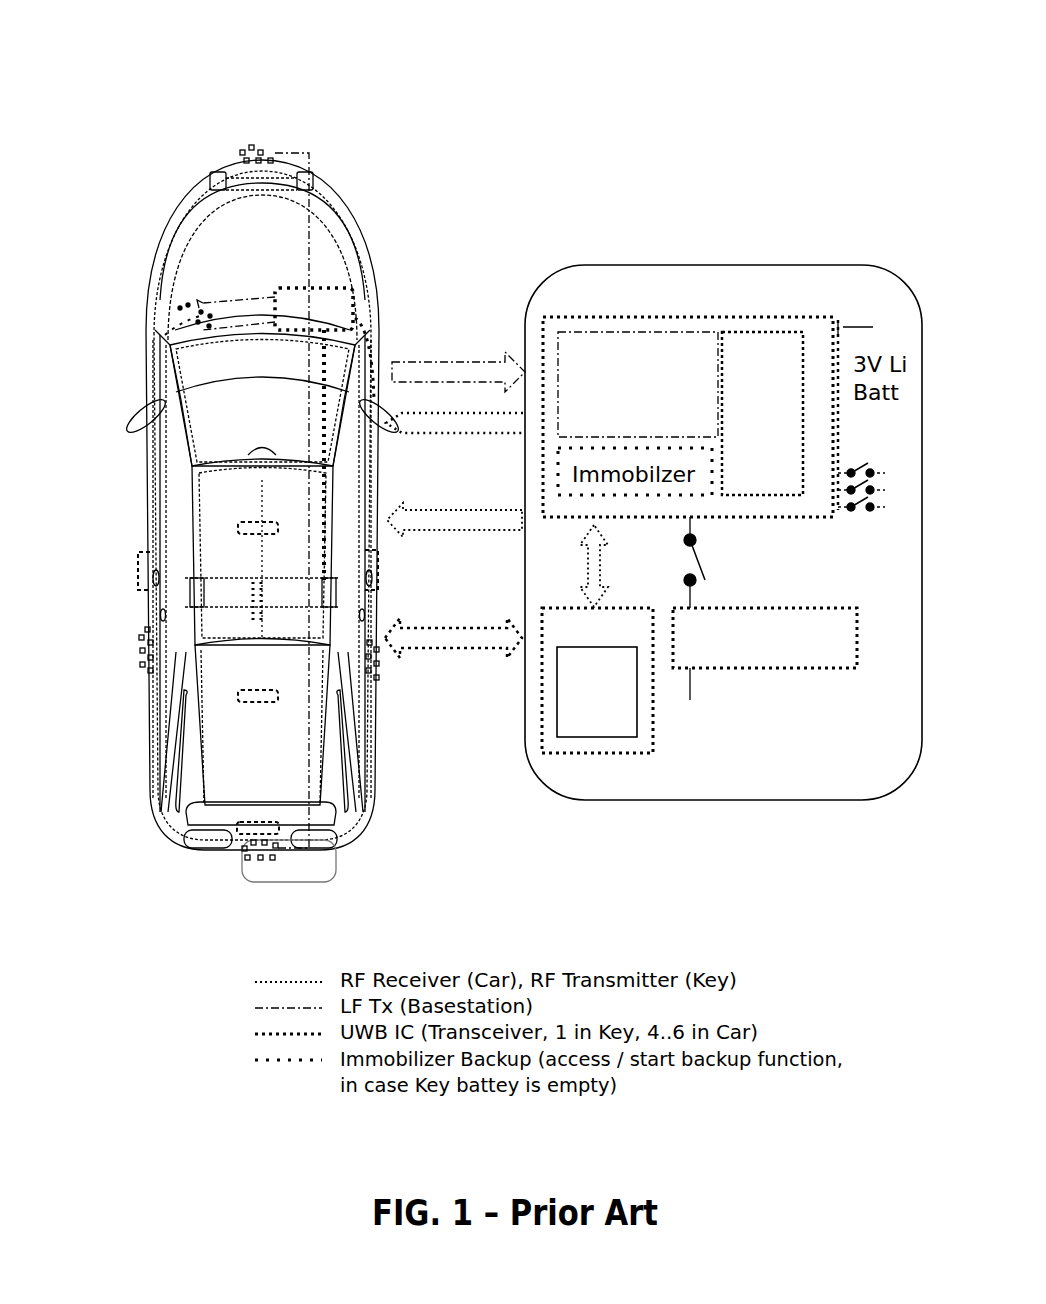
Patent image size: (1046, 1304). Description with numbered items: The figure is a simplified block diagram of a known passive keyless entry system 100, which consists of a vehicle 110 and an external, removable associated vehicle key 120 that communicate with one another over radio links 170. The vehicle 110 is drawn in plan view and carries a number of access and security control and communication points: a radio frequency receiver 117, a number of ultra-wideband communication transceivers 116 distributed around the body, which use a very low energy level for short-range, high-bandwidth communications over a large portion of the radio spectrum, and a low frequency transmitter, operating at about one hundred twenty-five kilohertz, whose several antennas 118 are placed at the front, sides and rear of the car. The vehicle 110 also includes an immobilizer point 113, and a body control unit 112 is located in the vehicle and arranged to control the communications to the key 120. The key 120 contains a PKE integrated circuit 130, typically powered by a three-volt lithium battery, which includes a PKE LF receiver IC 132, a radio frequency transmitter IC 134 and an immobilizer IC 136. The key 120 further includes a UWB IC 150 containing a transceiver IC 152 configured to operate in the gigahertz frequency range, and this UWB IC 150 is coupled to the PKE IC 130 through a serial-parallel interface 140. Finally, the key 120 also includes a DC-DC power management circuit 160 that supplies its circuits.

The passive keyless entry system 100 is at (175, 66).
The vehicle 110 is at (152, 232).
The body control unit 112 is at (350, 292).
The immobilizer point 113 is at (178, 308).
The ultra-wideband communication transceivers 116 is at (262, 148).
The radio frequency receiver 117 is at (255, 622).
The antennas 118 is at (252, 522).
The vehicle key 120 is at (835, 266).
The PKE integrated circuit 130 is at (655, 312).
The PKE LF receiver IC 132 is at (706, 338).
The radio frequency transmitter IC 134 is at (787, 330).
The immobilizer IC 136 is at (717, 503).
The serial-parallel interface 140 is at (580, 543).
The UWB IC 150 is at (650, 678).
The transceiver IC 152 is at (592, 737).
The DC-DC power management circuit 160 is at (822, 668).
The wireless communication links 170 is at (490, 340).